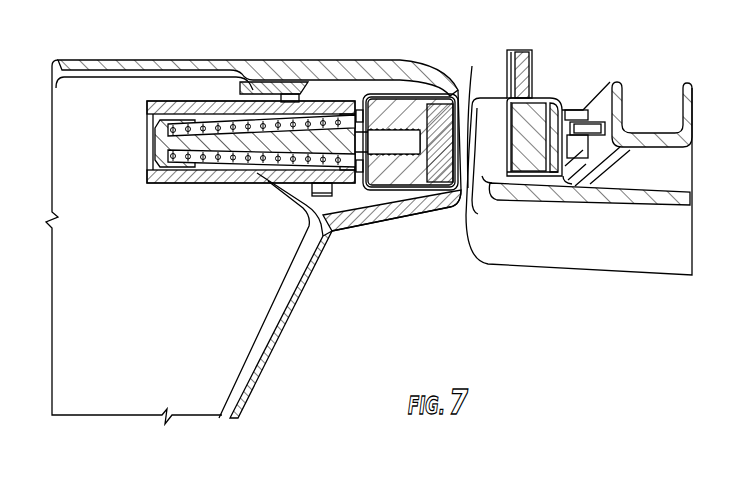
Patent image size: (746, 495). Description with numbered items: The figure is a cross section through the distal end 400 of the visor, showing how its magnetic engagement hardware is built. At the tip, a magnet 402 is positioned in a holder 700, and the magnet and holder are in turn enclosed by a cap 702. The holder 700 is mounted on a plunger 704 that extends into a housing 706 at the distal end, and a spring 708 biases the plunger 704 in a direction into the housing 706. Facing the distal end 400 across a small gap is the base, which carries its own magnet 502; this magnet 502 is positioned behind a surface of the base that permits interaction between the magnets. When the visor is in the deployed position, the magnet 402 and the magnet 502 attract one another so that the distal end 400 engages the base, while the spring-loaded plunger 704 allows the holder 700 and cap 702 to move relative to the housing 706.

The distal end 400 is at (413, 292).
The magnet 402 is at (473, 115).
The magnet 502 is at (536, 126).
The holder 700 is at (396, 118).
The cap 702 is at (380, 98).
The plunger 704 is at (328, 104).
The housing 706 is at (340, 183).
The spring 708 is at (213, 124).